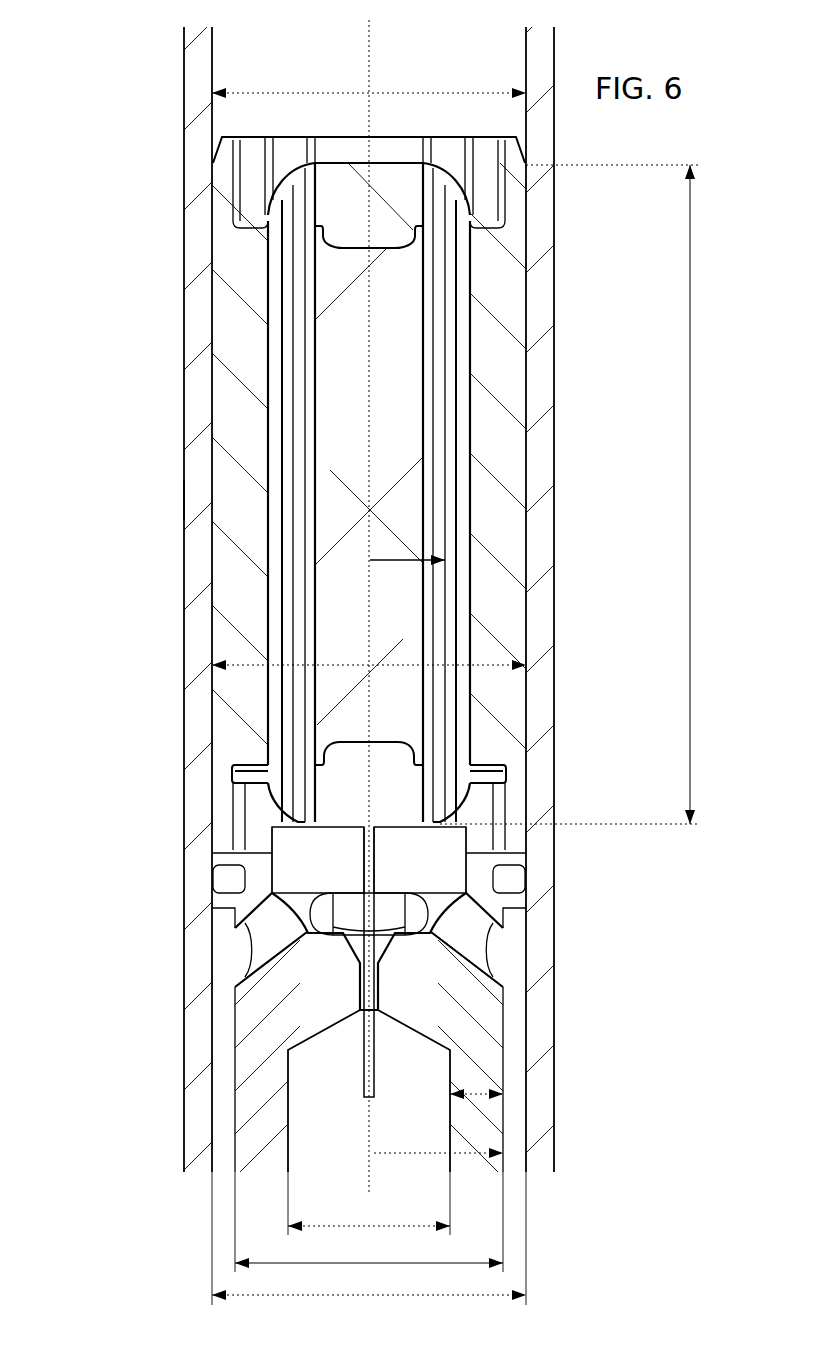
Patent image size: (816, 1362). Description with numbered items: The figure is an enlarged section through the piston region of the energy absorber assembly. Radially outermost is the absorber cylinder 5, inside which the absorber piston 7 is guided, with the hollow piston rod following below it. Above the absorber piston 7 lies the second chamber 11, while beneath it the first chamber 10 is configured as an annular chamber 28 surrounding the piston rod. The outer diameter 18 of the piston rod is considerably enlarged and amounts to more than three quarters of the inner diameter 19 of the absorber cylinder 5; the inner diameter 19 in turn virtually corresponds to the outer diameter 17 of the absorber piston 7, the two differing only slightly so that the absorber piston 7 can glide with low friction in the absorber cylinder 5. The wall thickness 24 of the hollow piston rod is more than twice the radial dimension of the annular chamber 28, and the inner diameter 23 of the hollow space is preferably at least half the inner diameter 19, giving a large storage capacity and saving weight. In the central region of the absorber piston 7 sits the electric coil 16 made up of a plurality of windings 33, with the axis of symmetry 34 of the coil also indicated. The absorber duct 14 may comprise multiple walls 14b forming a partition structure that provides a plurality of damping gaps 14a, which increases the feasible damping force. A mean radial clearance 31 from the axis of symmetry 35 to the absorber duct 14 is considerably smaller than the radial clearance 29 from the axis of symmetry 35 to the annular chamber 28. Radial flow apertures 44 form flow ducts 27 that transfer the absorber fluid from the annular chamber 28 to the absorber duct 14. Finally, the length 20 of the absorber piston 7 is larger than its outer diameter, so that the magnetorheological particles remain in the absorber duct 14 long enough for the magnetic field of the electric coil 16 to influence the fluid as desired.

The absorber cylinder 5 is at (200, 188).
The absorber piston 7 is at (500, 287).
The first chamber 10 is at (221, 1042).
The second chamber 11 is at (225, 82).
The absorber duct 14 is at (270, 327).
The damping gaps 14a is at (430, 465).
The walls 14b is at (445, 518).
The electric coil 16 is at (330, 768).
The outer diameter of the absorber piston 17 is at (245, 655).
The outer diameter of the piston rod 18 is at (369, 1222).
The inner diameter of the absorber cylinder 19 is at (300, 92).
The length of the absorber piston 20 is at (697, 545).
The inner diameter of the hollow space 23 is at (369, 1203).
The wall thickness of the hollow piston rod 24 is at (487, 1090).
The flow ducts 27 is at (471, 937).
The annular chamber 28 is at (219, 1112).
The radial clearance 29 is at (467, 1157).
The mean radial clearance 31 is at (450, 597).
The windings 33 is at (440, 735).
The axis of symmetry of the electric coil 34 is at (160, 493).
The axis of symmetry 35 is at (370, 80).
The radial flow apertures 44 is at (258, 938).